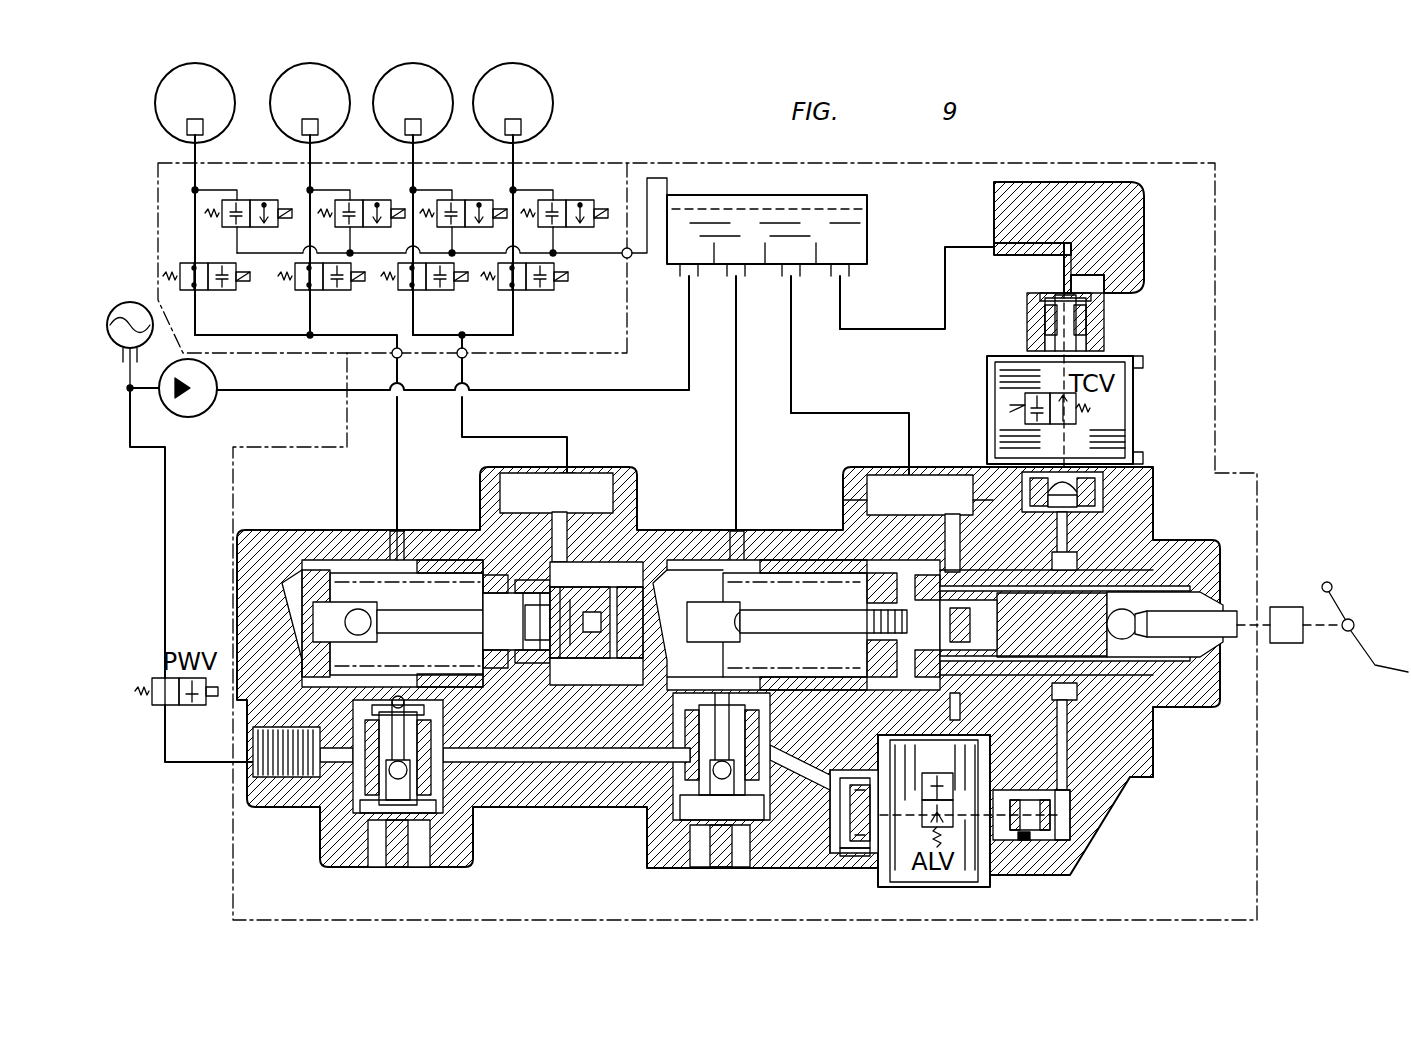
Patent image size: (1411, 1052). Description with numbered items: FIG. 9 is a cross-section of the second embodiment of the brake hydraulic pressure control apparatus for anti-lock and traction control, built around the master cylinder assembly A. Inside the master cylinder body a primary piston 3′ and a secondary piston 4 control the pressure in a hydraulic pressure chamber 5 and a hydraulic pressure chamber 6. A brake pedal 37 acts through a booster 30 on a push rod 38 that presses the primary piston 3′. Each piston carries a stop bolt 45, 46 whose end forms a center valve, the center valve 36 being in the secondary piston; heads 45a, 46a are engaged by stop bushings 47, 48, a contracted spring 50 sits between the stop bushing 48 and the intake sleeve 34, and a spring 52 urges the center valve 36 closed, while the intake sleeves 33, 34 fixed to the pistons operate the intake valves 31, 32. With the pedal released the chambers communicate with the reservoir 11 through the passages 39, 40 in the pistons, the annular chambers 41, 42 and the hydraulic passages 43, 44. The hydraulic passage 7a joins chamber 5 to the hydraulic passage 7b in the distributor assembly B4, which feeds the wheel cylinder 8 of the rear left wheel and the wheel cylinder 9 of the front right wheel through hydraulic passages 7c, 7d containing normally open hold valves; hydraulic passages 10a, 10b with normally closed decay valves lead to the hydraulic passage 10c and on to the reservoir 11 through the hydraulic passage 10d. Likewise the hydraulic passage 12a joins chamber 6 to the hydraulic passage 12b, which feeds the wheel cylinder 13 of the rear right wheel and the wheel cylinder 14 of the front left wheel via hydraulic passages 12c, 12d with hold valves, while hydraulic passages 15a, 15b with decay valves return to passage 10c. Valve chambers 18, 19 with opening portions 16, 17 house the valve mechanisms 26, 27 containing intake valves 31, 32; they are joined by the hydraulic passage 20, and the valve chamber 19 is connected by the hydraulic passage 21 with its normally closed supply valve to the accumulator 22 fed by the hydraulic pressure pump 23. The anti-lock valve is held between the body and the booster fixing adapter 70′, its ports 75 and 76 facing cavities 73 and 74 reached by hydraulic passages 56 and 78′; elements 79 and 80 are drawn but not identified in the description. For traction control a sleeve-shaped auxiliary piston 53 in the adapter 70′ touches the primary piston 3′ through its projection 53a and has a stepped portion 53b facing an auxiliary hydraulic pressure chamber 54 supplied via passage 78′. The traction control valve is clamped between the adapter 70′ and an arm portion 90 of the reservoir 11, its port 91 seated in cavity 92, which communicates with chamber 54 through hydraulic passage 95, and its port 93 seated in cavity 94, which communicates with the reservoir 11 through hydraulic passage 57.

The wheel cylinder 14 is at (187, 128).
The wheel cylinder 13 is at (302, 128).
The wheel cylinder 9 is at (405, 128).
The wheel cylinder 8 is at (505, 128).
The hydraulic passage 15b is at (236, 200).
The hydraulic passage 15a is at (349, 200).
The hydraulic passage 10b is at (451, 200).
The hydraulic passage 10a is at (552, 200).
The hydraulic passage 12d is at (215, 325).
The hydraulic passage 12c is at (330, 325).
The hydraulic passage 7d is at (437, 325).
The hydraulic passage 7c is at (535, 325).
The hydraulic passage 10c is at (606, 272).
The hydraulic passage 10d is at (660, 178).
The hydraulic passage 12b is at (345, 357).
The hydraulic passage 7b is at (468, 357).
The hydraulic passage 7a is at (468, 420).
The hydraulic passage 12a is at (400, 455).
The accumulator 22 is at (120, 305).
The hydraulic pressure pump 23 is at (205, 412).
The hydraulic passage 21 is at (165, 466).
The reservoir 11 is at (867, 233).
The hydraulic passage 57 is at (1000, 245).
The arm portion 90 is at (1144, 257).
The port 93 is at (1045, 325).
The cavity 94 is at (1091, 297).
The hydraulic passage 43 is at (909, 432).
The hydraulic passage 44 is at (566, 437).
The stop bushing 47 is at (730, 540).
The stop bushing 48 is at (305, 575).
The head 46a is at (380, 590).
The hydraulic pressure chamber 6 is at (450, 600).
The intake sleeve 34 is at (430, 560).
The stop bolt 46 is at (420, 625).
The annular chamber 42 is at (582, 560).
The passage 40 is at (612, 612).
The secondary piston 4 is at (620, 665).
The contracted spring 50 is at (488, 670).
The spring 52 is at (525, 670).
The center valve 36 is at (548, 672).
The intake sleeve 33 is at (780, 568).
The hydraulic pressure chamber 5 is at (800, 590).
The head 45a is at (800, 605).
The stop bolt 45 is at (810, 630).
The projection 53a is at (945, 560).
The annular chamber 41 is at (940, 560).
The opening portion 16 is at (700, 682).
The auxiliary piston 53 is at (1170, 578).
The passage 39 is at (1005, 613).
The push rod 38 is at (1237, 612).
The booster 30 is at (1285, 607).
The brake pedal 37 is at (1372, 665).
The cavity 92 is at (1090, 508).
The port 91 is at (1095, 500).
The hydraulic passage 95 is at (1057, 535).
The auxiliary hydraulic pressure chamber 54 is at (1077, 562).
The pressure-receiving stepped portion 53b is at (1067, 745).
The primary piston 3′ is at (960, 705).
The booster fixing adapter 70′ is at (1170, 707).
The hydraulic passage 78′ is at (1135, 778).
The port 76 is at (1070, 808).
The cavity 74 is at (1065, 840).
The seal 80 is at (1030, 842).
The port 75 is at (830, 815).
The seal 79 is at (858, 856).
The cavity 73 is at (830, 850).
The hydraulic passage 56 is at (800, 768).
The valve mechanism 26 is at (755, 735).
The valve chamber 18 is at (685, 760).
The intake valve 31 is at (688, 778).
The hydraulic passage 20 is at (556, 763).
The intake valve 32 is at (458, 812).
The valve mechanism 27 is at (440, 770).
The valve chamber 19 is at (375, 735).
The opening portion 17 is at (390, 700).
The distributor assembly B4 is at (598, 163).
The master cylinder assembly A is at (1268, 785).